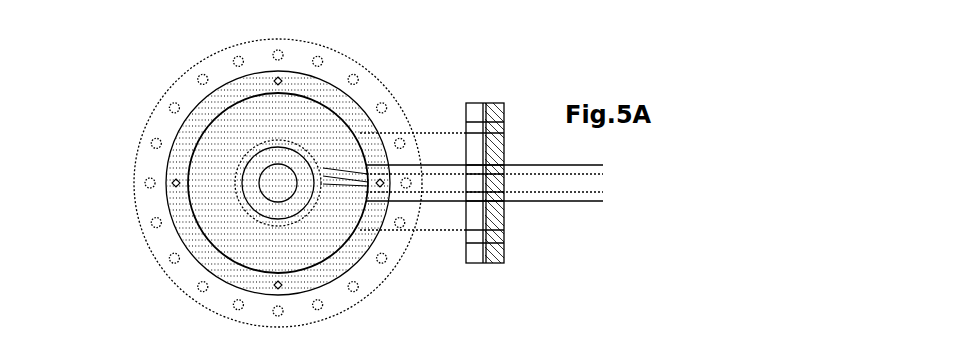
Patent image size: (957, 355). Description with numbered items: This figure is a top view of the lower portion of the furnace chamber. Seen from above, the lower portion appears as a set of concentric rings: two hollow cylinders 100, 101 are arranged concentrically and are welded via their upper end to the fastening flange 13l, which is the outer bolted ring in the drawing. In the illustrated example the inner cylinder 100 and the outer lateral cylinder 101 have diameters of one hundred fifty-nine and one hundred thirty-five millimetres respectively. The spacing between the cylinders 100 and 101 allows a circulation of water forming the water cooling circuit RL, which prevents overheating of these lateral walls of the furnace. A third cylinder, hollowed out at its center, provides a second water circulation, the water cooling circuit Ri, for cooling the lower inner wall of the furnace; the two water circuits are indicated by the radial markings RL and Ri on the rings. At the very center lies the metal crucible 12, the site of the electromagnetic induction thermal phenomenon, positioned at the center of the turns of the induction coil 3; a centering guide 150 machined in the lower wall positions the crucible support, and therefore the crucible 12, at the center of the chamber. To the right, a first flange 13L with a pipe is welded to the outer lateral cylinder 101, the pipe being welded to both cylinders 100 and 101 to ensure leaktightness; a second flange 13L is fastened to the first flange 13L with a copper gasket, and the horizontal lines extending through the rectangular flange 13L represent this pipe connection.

The induction coil 3 is at (283, 233).
The metal crucible 12 is at (278, 197).
The hollow cylinder 100 is at (294, 75).
The outer lateral cylinder 101 is at (173, 162).
The centering guide 150 is at (289, 158).
The flange 13L is at (481, 103).
The fastening flange 13l is at (180, 287).
The water cooling circuit Ri is at (242, 120).
The water cooling circuit RL is at (200, 107).